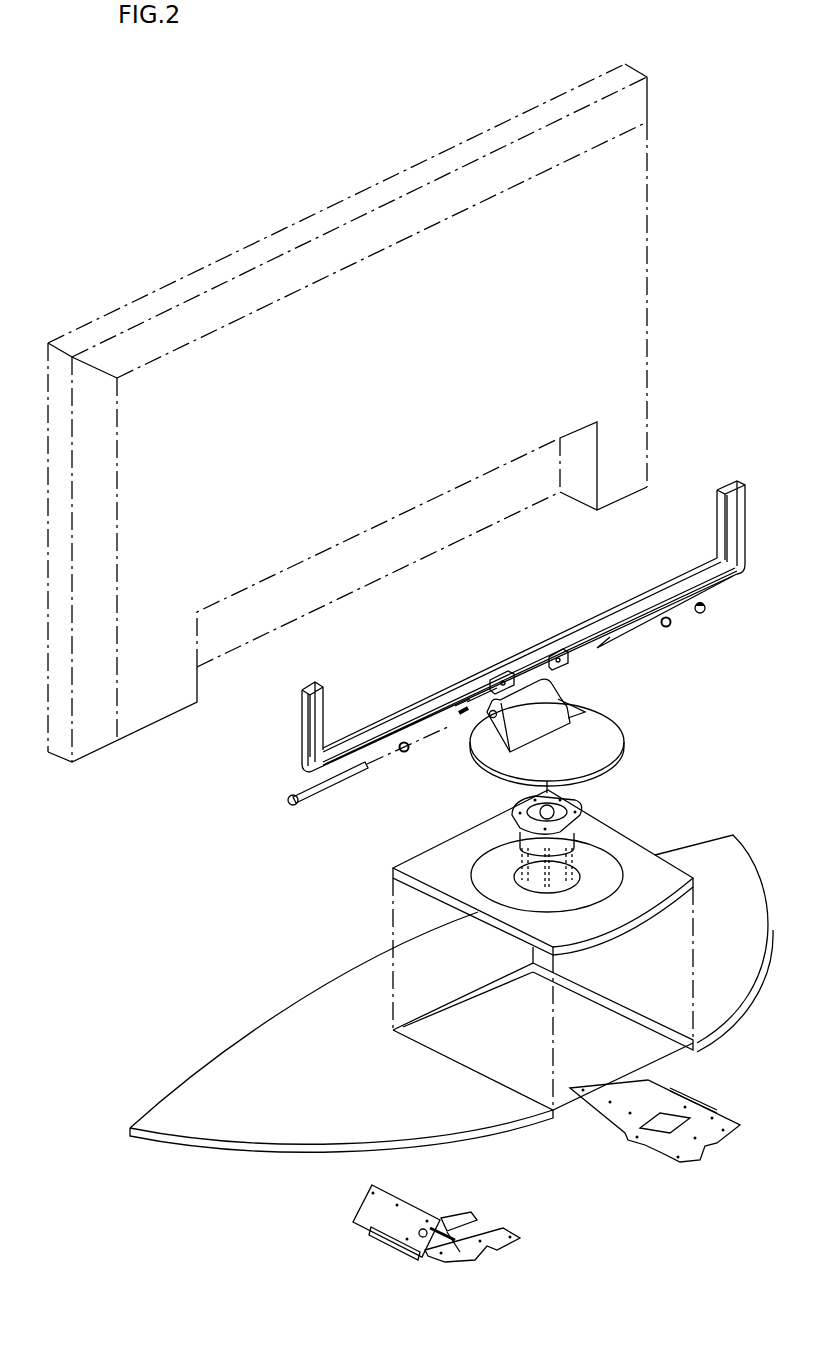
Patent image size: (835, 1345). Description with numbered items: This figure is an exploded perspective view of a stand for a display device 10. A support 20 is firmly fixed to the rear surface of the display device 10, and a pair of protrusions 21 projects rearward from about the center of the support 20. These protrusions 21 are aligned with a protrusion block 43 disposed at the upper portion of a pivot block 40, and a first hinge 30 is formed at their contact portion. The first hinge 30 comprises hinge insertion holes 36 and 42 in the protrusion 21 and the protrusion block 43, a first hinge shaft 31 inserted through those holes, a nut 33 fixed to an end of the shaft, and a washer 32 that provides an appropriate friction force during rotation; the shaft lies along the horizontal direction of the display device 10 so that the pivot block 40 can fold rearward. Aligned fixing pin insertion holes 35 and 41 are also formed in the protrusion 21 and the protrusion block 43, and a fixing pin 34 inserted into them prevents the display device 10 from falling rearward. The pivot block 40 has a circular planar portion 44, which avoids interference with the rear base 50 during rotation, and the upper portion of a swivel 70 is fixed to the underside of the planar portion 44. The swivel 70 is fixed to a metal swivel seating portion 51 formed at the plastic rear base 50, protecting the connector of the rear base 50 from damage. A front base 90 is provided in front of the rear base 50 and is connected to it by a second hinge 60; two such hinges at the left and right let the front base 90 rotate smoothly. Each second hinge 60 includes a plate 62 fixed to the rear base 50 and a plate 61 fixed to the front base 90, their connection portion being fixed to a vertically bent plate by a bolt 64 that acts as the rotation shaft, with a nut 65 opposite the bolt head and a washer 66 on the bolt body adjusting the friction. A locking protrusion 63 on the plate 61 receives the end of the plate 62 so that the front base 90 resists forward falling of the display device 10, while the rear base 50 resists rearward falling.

The display device 10 is at (648, 270).
The support 20 is at (620, 607).
The protrusions 21 is at (562, 647).
The first hinge 30 is at (275, 804).
The first hinge shaft 31 is at (307, 788).
The washer 32 is at (402, 743).
The nut 33 is at (707, 610).
The fixing pin 34 is at (465, 708).
The fixing pin insertion hole 35 is at (490, 668).
The hinge insertion hole 36 is at (497, 677).
The pivot block 40 is at (624, 766).
The fixing pin insertion hole 41 is at (489, 719).
The hinge insertion hole 42 is at (462, 716).
The protrusion block 43 is at (557, 713).
The planar portion 44 is at (593, 742).
The rear base 50 is at (420, 865).
The swivel seating portion 51 is at (578, 864).
The second hinge 60 is at (348, 1219).
The plate 61 is at (388, 1192).
The plate 62 is at (463, 1212).
The locking protrusion 63 is at (430, 1210).
The bolt 64 is at (455, 1230).
The nut 65 is at (425, 1258).
The washer 66 is at (458, 1258).
The swivel 70 is at (578, 803).
The front base 90 is at (718, 847).